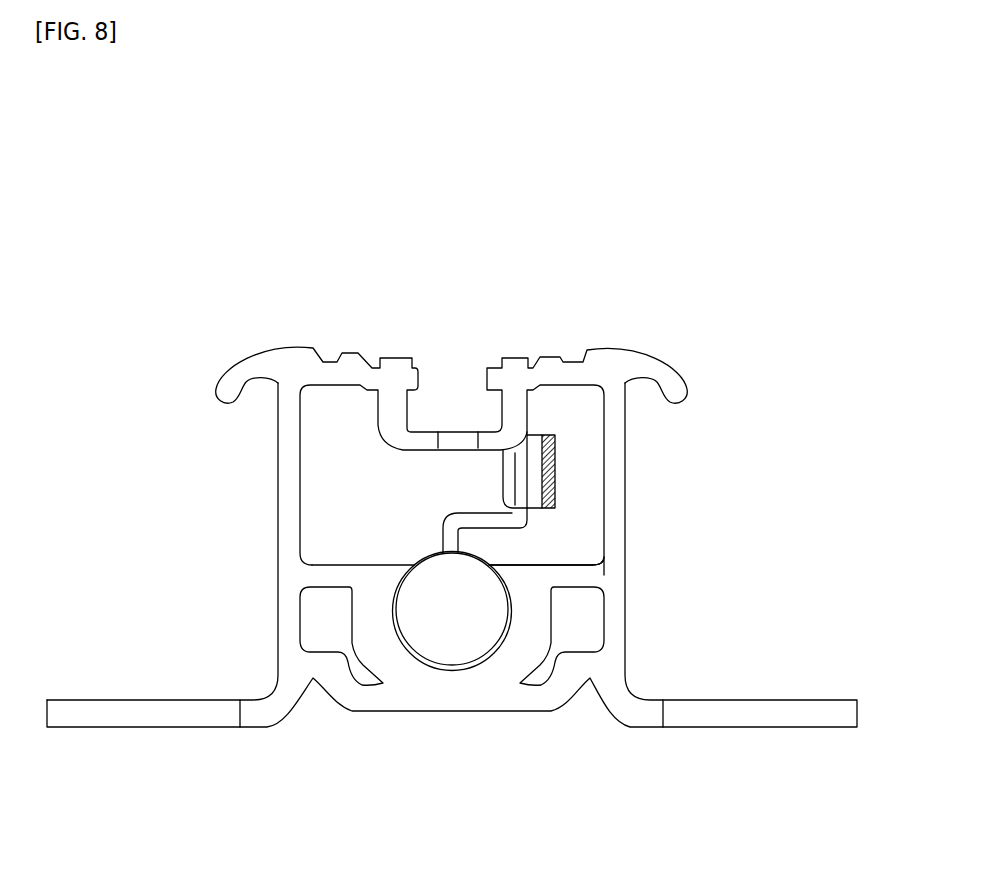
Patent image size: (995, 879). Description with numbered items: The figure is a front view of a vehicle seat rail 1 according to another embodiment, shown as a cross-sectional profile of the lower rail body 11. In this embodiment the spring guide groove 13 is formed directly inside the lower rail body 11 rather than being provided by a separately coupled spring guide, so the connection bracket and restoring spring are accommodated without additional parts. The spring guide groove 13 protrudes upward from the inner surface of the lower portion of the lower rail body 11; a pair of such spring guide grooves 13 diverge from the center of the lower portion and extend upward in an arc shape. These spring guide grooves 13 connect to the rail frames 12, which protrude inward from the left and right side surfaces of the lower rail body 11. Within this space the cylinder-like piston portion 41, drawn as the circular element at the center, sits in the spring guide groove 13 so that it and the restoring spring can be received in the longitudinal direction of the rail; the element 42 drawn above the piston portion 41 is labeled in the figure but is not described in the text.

The vehicle seat rail 1 is at (109, 293).
The lower rail body 11 is at (612, 478).
The rail frame 12 is at (553, 574).
The spring guide groove 13 is at (537, 620).
The piston portion 41 is at (445, 627).
The elastic member 42 is at (530, 513).